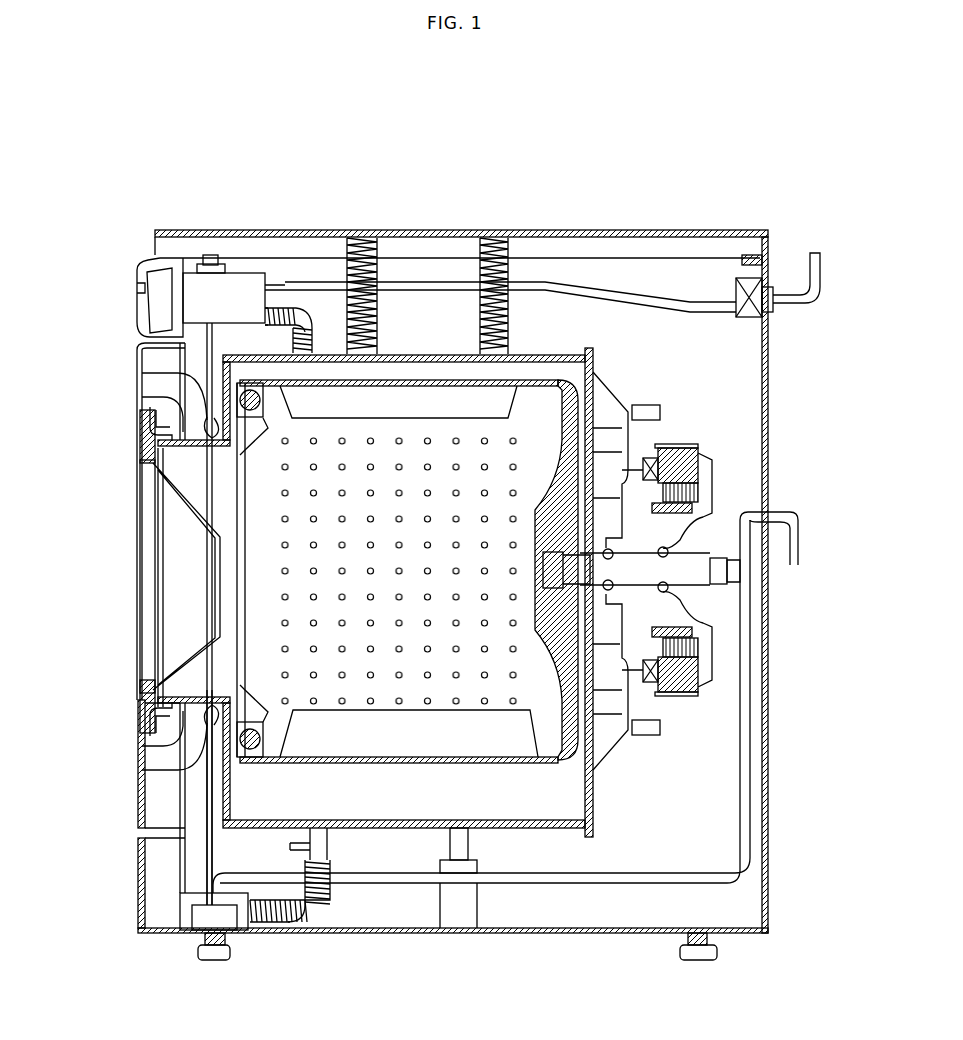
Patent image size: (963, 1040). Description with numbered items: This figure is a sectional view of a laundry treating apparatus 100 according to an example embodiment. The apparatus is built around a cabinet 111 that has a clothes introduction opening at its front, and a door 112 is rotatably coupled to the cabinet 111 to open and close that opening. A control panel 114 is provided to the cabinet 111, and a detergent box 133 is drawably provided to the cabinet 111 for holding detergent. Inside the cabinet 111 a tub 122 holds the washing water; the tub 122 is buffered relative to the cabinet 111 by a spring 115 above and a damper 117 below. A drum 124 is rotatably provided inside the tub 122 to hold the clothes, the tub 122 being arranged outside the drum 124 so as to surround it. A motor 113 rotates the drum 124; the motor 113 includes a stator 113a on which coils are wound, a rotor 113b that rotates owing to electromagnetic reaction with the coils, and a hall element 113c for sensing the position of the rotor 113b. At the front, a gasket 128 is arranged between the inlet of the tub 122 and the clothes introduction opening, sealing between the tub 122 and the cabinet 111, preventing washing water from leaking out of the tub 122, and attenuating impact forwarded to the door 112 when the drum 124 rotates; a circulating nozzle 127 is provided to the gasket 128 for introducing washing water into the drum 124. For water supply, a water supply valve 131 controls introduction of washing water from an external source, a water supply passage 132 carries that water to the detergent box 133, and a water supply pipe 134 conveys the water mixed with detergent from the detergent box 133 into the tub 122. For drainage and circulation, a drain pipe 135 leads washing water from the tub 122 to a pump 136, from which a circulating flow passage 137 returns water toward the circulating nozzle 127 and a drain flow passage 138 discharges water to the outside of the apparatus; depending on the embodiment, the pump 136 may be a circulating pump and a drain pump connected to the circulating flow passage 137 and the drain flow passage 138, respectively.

The laundry treating apparatus 100 is at (265, 182).
The cabinet 111 is at (768, 875).
The door 112 is at (160, 578).
The motor 113 is at (737, 570).
The stator 113a is at (690, 478).
The rotor 113b is at (668, 452).
The hall element 113c is at (680, 508).
The control panel 114 is at (140, 330).
The spring 115 is at (493, 263).
The damper 117 is at (467, 907).
The tub 122 is at (568, 422).
The drum 124 is at (636, 414).
The circulating nozzle 127 is at (143, 375).
The gasket 128 is at (145, 398).
The water supply valve 131 is at (745, 285).
The water supply passage 132 is at (602, 298).
The detergent box 133 is at (252, 283).
The water supply pipe 134 is at (298, 315).
The drain pipe 135 is at (303, 922).
The pump 136 is at (207, 920).
The circulating flow passage 137 is at (208, 813).
The drain flow passage 138 is at (360, 880).